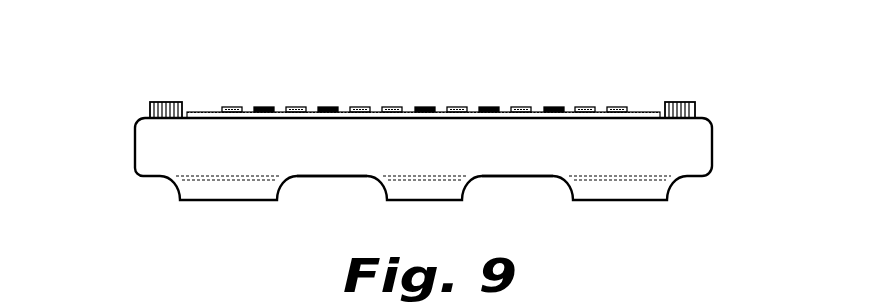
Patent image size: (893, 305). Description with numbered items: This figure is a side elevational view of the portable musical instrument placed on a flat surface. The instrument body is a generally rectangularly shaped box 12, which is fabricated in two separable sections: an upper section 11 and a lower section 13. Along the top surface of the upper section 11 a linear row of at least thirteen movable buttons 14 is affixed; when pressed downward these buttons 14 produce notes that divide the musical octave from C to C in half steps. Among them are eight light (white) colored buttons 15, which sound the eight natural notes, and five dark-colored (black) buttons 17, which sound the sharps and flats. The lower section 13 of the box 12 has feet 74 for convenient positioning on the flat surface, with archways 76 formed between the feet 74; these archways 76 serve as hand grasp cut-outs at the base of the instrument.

The upper section 11 is at (137, 130).
The box 12 is at (716, 127).
The lower section 13 is at (156, 177).
The movable buttons 14 is at (424, 69).
The light colored buttons 15 is at (462, 110).
The dark-colored buttons 17 is at (555, 110).
The feet 74 is at (257, 188).
The archways 76 is at (320, 183).